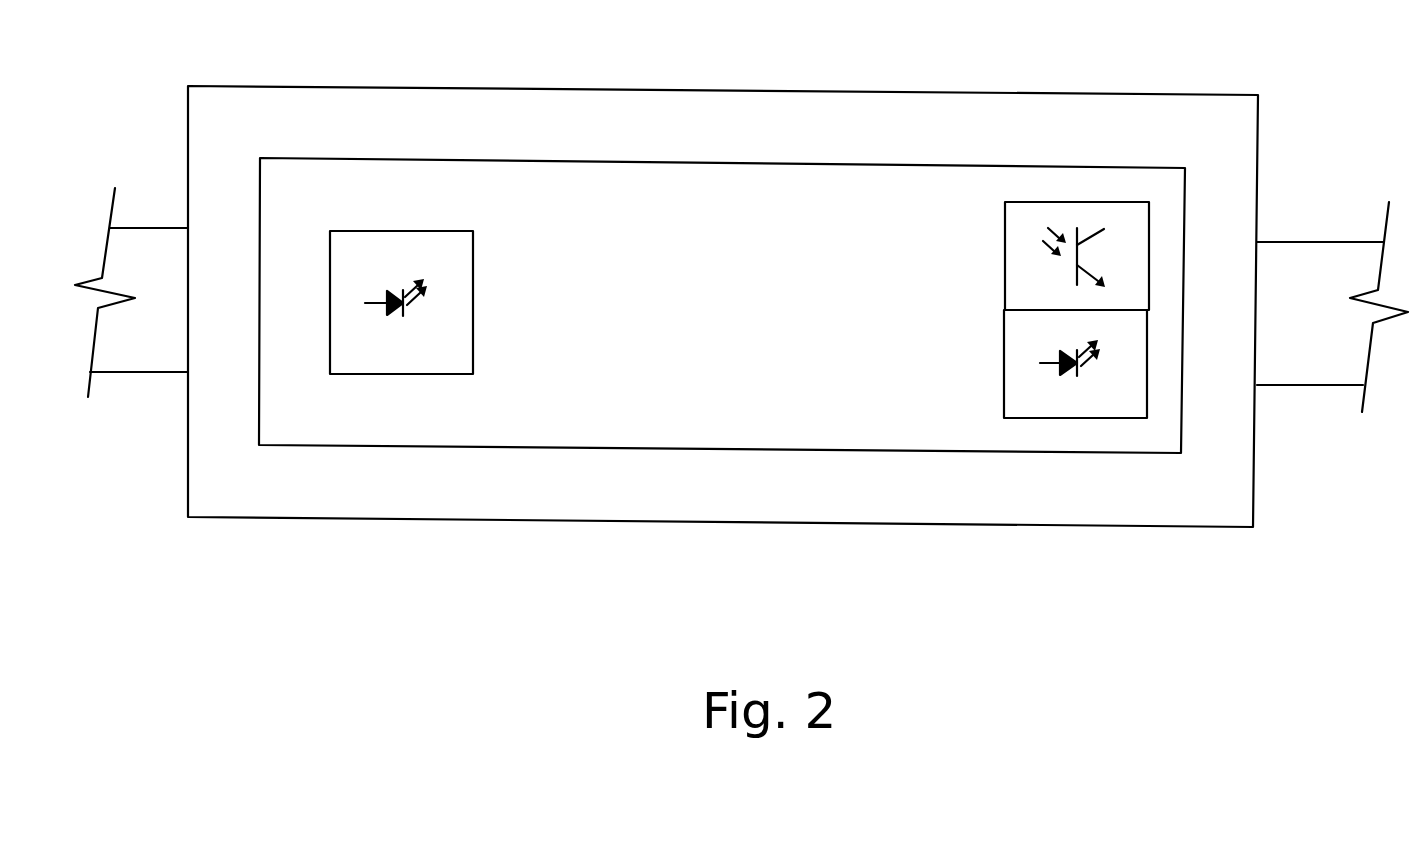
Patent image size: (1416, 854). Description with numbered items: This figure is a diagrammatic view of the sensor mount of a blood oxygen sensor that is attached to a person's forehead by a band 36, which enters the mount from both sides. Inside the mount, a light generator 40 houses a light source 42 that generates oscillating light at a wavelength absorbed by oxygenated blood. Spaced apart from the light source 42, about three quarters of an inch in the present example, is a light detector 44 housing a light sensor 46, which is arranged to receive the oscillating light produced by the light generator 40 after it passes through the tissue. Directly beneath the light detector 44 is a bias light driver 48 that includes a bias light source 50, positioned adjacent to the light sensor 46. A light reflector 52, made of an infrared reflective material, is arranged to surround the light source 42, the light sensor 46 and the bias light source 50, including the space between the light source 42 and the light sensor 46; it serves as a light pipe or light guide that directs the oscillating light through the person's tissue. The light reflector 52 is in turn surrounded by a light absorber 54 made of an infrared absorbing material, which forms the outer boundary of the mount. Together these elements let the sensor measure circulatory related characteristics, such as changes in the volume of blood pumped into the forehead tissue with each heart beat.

The band 36 is at (160, 355).
The light generator 40 is at (473, 286).
The light source 42 is at (410, 305).
The light detector 44 is at (1005, 260).
The light sensor 46 is at (1104, 232).
The bias light driver 48 is at (1004, 372).
The bias light source 50 is at (1092, 368).
The light reflector 52 is at (857, 428).
The light absorber 54 is at (934, 132).